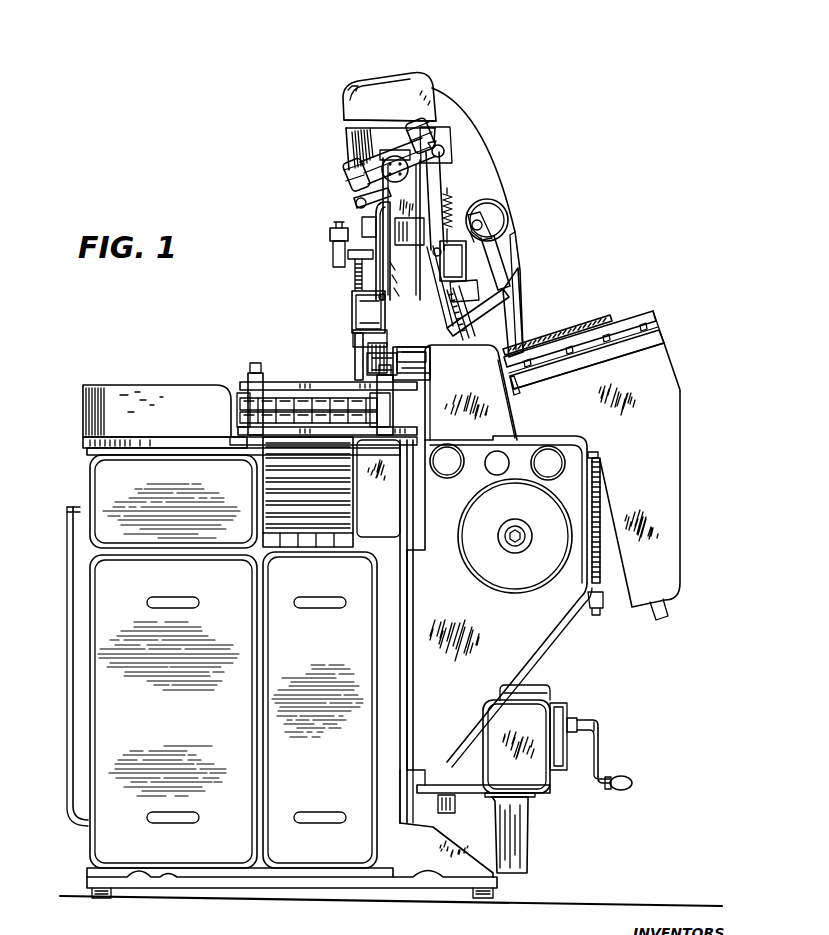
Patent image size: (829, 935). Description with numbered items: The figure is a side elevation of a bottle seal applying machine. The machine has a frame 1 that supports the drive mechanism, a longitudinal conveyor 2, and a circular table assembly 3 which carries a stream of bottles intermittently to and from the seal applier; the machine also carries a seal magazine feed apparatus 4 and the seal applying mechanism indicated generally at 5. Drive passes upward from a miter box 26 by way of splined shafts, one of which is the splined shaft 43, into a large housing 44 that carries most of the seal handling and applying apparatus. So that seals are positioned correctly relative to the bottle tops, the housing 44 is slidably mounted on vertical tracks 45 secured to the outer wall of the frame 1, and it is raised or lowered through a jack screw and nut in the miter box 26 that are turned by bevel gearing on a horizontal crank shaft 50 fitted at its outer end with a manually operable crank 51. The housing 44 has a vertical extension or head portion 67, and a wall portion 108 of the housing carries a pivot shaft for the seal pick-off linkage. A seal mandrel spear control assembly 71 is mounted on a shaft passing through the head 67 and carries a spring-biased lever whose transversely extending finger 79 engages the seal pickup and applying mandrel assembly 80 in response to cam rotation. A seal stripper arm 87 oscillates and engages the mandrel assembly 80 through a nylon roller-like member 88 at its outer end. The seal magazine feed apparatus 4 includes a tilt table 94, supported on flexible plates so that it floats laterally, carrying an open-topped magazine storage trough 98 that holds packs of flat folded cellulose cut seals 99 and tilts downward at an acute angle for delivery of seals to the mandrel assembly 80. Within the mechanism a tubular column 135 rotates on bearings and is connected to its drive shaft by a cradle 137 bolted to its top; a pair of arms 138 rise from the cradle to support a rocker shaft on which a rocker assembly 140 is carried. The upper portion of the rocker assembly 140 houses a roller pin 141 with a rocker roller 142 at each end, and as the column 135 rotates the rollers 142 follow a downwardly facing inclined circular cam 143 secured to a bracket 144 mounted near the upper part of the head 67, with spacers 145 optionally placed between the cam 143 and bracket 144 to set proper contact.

The frame 1 is at (357, 893).
The longitudinal conveyor 2 is at (330, 548).
The circular table assembly 3 is at (237, 379).
The seal magazine feed apparatus 4 is at (682, 364).
The seal applying mechanism 5 is at (443, 87).
The miter box 26 is at (547, 786).
The splined shaft 43 is at (450, 815).
The housing 44 is at (540, 648).
The vertical tracks 45 is at (415, 783).
The crank shaft 50 is at (570, 718).
The crank 51 is at (615, 778).
The head portion 67 is at (482, 166).
The seal mandrel spear control assembly 71 is at (507, 258).
The finger 79 is at (484, 318).
The seal pickup and applying mandrel assembly 80 is at (450, 190).
The seal stripper arm 87 is at (332, 254).
The roller-like member 88 is at (355, 222).
The tilt table 94 is at (660, 335).
The magazine storage trough 98 is at (620, 330).
The flat folded cellulose cut seals 99 is at (548, 340).
The wall portion 108 is at (500, 414).
The tubular column 135 is at (430, 352).
The cradle 137 is at (409, 225).
The arms 138 is at (385, 200).
The rocker assembly 140 is at (340, 167).
The roller pin 141 is at (436, 133).
The rocker roller 142 is at (432, 144).
The inclined circular cam 143 is at (432, 114).
The bracket 144 is at (400, 82).
The spacers 145 is at (345, 120).